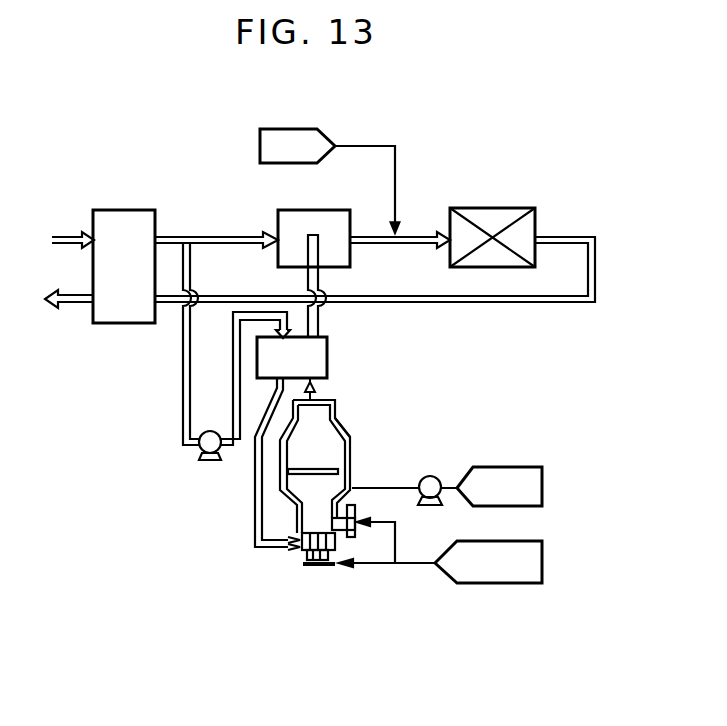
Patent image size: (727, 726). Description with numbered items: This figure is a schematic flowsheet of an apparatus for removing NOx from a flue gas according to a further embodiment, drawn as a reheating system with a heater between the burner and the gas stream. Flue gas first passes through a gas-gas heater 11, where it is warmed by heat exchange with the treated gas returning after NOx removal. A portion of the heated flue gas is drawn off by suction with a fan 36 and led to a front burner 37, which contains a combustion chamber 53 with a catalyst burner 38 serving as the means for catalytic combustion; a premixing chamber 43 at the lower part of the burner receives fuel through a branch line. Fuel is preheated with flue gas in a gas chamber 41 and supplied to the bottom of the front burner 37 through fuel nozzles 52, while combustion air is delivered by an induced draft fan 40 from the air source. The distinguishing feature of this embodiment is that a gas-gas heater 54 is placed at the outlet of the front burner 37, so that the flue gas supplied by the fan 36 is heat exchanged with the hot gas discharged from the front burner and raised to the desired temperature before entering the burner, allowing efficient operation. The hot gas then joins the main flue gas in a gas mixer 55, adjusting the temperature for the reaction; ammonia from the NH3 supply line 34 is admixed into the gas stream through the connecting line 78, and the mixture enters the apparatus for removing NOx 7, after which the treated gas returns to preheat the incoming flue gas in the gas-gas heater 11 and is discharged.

The gas-gas heater 11 is at (128, 210).
The gas mixer 55 is at (278, 212).
The NH3 supply line 34 is at (368, 146).
The apparatus for removing NOx 7 is at (492, 208).
The gas line to reactor 78 is at (385, 244).
The gas-gas heater 54 is at (327, 352).
The combustion chamber 53 is at (317, 428).
The front burner 37 is at (350, 440).
The catalyst burner 38 is at (325, 468).
The induced draft fan 40 is at (432, 476).
The fan 36 is at (202, 455).
The premixing chamber 43 is at (297, 496).
The fuel nozzles 52 is at (300, 556).
The gas chamber 41 is at (340, 552).